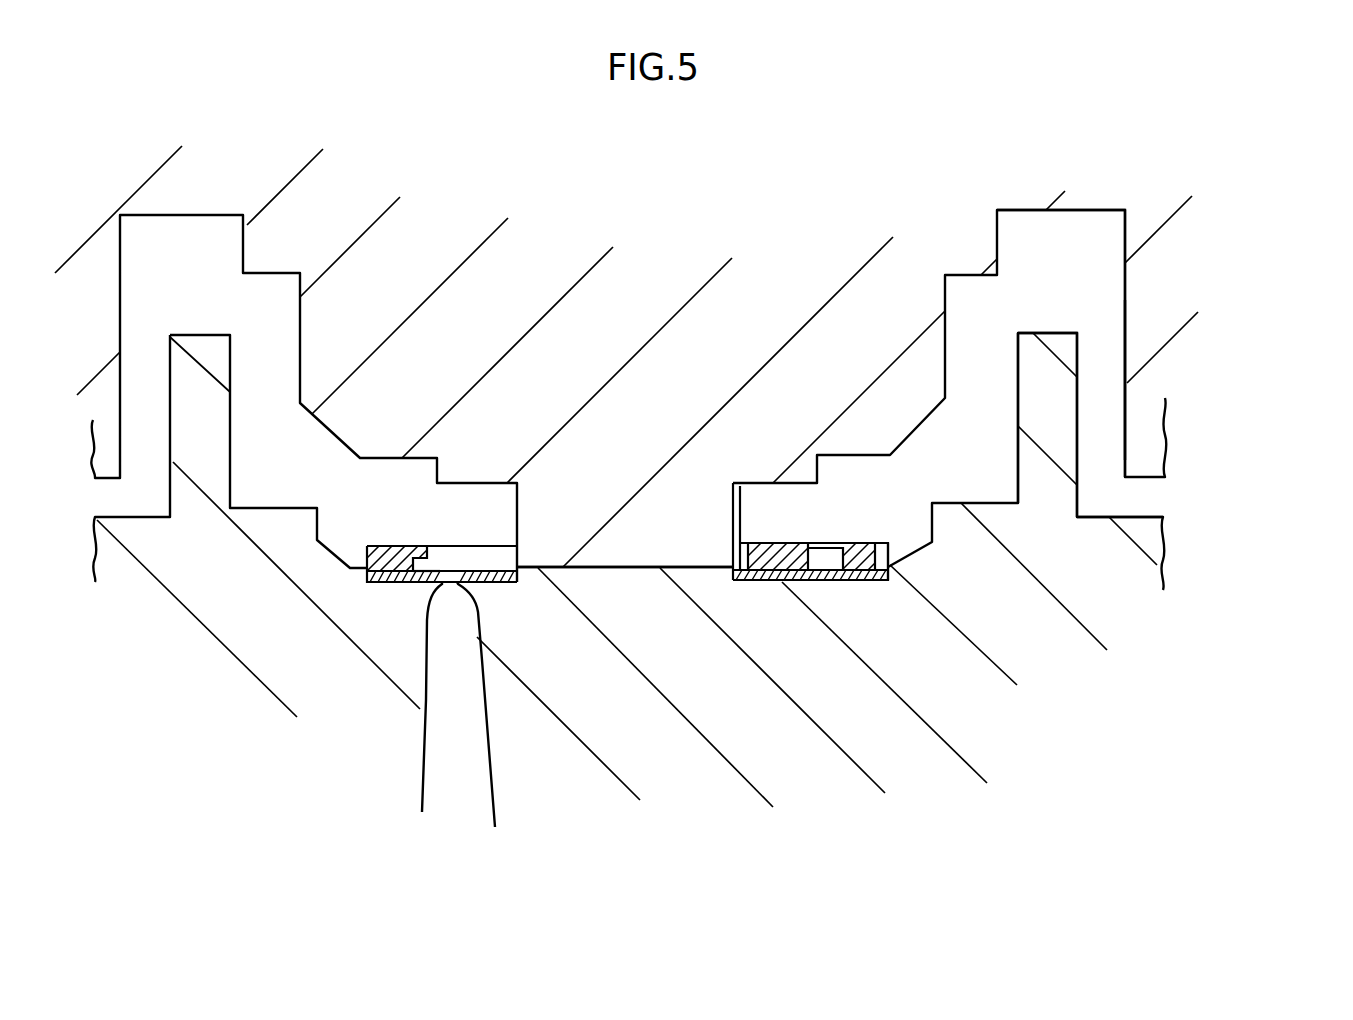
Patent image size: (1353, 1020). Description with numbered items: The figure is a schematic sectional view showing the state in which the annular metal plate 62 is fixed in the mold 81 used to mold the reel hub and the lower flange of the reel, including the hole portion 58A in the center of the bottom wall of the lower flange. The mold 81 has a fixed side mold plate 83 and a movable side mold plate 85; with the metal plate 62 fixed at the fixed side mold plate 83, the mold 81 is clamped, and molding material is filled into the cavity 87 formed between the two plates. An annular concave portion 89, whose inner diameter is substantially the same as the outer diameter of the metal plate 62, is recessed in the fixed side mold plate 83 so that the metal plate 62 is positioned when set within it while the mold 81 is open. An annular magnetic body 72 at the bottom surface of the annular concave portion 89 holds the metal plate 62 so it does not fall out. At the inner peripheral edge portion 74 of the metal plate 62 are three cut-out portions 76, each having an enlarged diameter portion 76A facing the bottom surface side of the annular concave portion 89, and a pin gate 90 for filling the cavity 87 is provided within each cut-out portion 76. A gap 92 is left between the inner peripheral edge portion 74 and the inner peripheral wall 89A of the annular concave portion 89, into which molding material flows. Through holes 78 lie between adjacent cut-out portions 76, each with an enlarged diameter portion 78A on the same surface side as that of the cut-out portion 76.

The hole portion 58A is at (728, 513).
The metal plate 62 is at (890, 551).
The magnetic body 72 is at (865, 583).
The inner peripheral edge portion 74 is at (745, 542).
The cut-out portion 76 is at (432, 558).
The enlarged diameter portion 76A is at (418, 585).
The through hole 78 is at (827, 543).
The enlarged diameter portion 78A is at (815, 582).
The mold 81 is at (1271, 342).
The fixed side mold plate 83 is at (1123, 583).
The movable side mold plate 85 is at (1145, 333).
The cavity 87 is at (1068, 298).
The annular concave portion 89 is at (875, 542).
The inner peripheral wall 89A is at (740, 483).
The gate 90 is at (460, 588).
The gap 92 is at (742, 583).